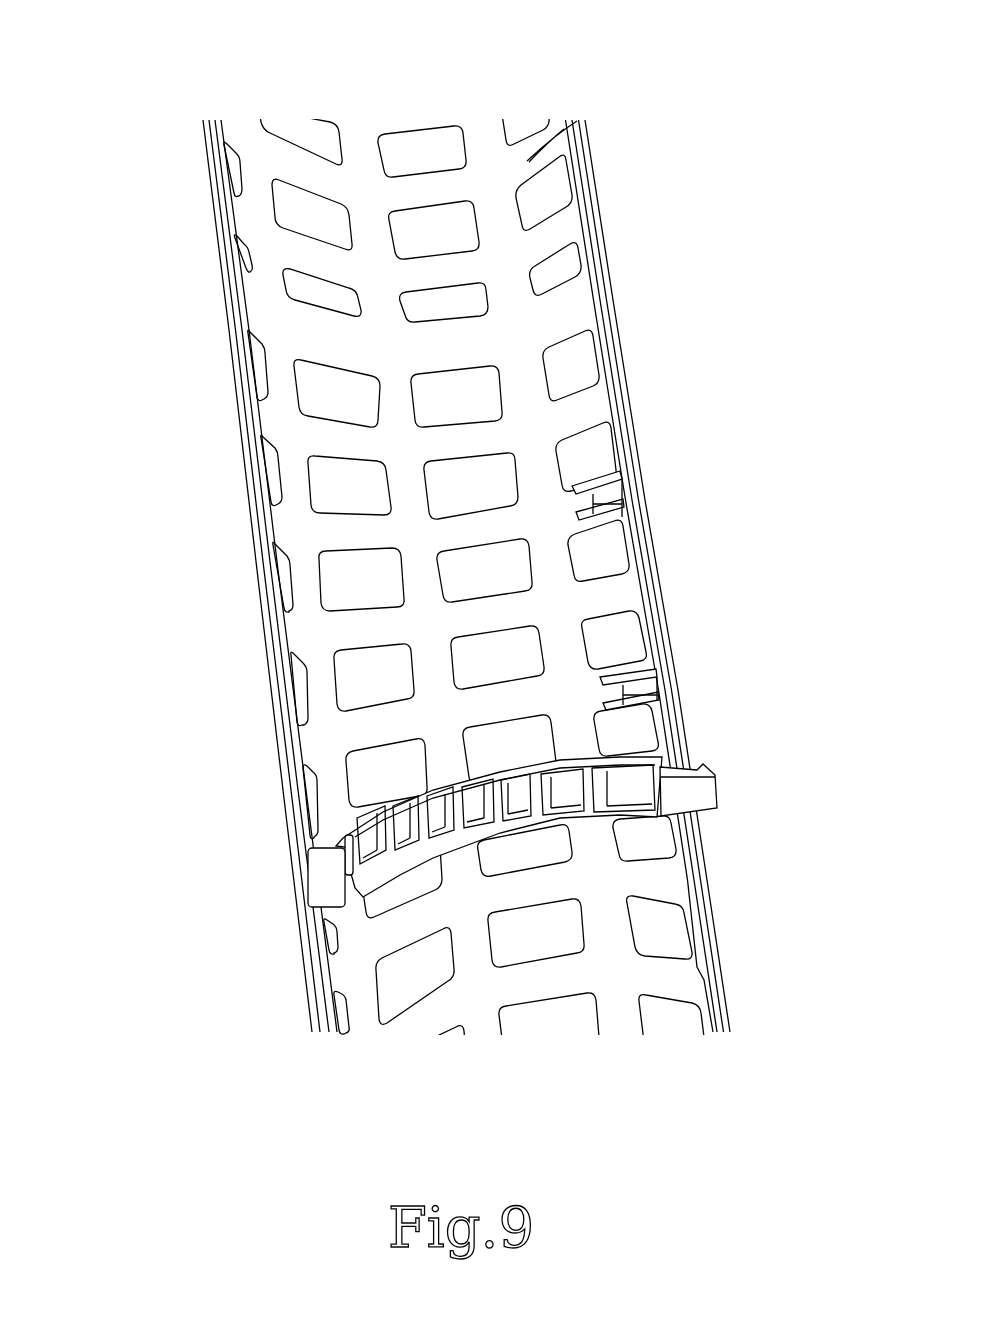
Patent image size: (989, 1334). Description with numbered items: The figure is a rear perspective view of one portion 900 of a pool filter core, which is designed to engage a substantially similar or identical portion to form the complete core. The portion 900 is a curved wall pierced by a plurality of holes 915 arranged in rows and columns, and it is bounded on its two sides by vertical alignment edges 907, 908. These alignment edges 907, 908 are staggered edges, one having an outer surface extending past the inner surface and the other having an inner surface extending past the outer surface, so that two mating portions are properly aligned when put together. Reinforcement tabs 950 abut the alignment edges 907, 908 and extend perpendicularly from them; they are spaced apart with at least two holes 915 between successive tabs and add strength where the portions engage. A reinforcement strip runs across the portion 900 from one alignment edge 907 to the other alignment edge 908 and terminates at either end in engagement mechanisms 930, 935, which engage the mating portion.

The portion of pool filter core 900 is at (445, 555).
The alignment edge 907 is at (213, 576).
The alignment edge 908 is at (659, 576).
The holes 915 is at (177, 336).
The engagement mechanism 930 is at (387, 832).
The engagement mechanism 935 is at (766, 774).
The reinforcement tabs 950 is at (662, 392).